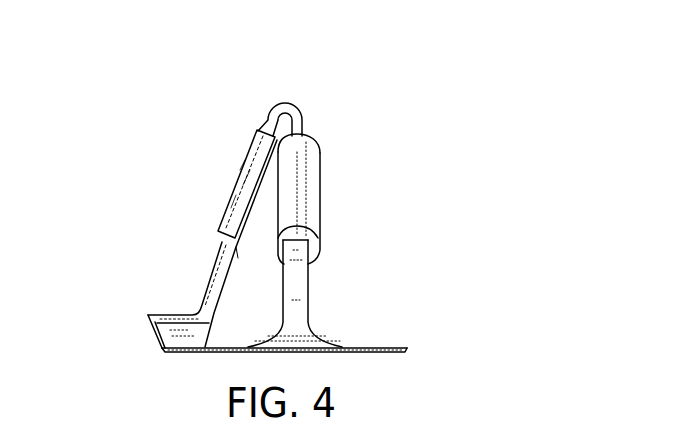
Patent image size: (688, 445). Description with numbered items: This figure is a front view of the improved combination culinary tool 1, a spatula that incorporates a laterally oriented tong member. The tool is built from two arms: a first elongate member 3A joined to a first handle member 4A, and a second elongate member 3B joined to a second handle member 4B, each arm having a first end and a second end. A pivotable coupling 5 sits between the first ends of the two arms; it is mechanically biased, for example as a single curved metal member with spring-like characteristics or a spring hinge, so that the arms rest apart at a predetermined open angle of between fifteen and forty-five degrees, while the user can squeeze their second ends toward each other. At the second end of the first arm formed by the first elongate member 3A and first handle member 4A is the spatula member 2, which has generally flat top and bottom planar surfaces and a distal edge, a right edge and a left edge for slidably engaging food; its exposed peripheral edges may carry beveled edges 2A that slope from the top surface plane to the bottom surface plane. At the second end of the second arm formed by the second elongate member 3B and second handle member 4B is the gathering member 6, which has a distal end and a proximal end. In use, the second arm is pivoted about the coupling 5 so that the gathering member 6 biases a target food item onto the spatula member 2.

The improved combination culinary tool 1 is at (110, 78).
The spatula member 2 is at (376, 343).
The beveled edges 2A is at (402, 346).
The first elongate member 3A is at (308, 282).
The second elongate member 3B is at (208, 283).
The first handle member 4A is at (322, 180).
The second handle member 4B is at (239, 176).
The pivotable coupling 5 is at (291, 103).
The gathering member 6 is at (147, 316).